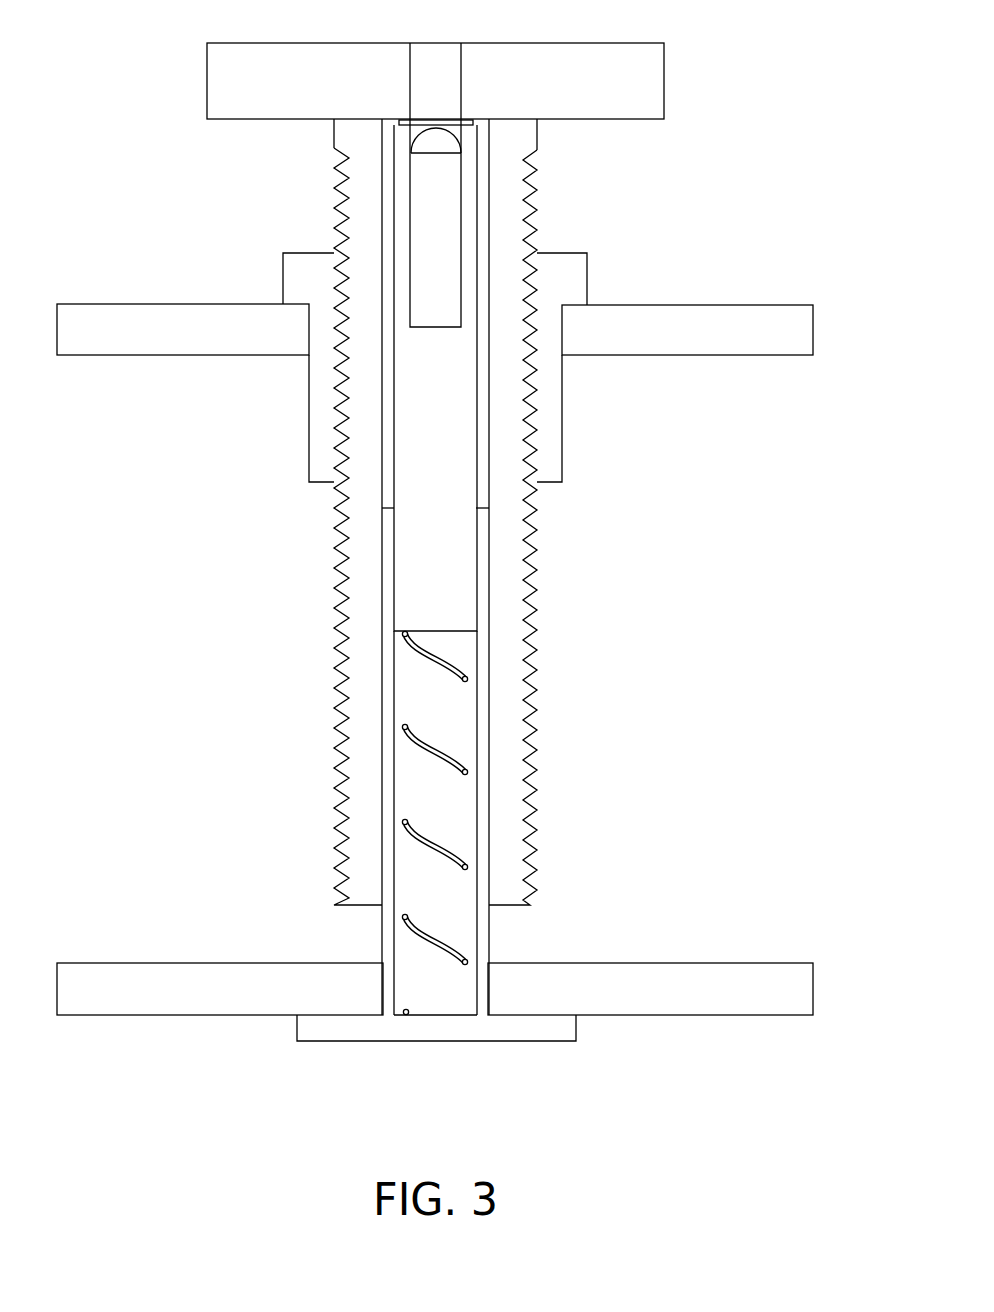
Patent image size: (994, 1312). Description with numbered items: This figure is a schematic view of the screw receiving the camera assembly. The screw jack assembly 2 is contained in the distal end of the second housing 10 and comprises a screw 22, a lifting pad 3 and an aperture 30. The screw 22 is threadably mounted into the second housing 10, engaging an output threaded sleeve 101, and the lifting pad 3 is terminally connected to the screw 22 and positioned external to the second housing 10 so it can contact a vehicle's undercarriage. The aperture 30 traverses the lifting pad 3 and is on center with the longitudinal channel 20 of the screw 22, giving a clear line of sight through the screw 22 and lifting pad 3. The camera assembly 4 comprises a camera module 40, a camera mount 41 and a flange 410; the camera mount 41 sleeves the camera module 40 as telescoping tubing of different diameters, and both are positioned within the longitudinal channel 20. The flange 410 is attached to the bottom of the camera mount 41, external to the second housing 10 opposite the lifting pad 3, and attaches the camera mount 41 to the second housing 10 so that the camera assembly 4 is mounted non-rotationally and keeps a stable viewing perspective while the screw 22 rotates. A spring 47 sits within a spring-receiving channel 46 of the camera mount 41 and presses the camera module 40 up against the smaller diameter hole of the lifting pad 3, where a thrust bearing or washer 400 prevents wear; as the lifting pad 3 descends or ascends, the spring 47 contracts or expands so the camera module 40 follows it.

The screw jack assembly 2 is at (733, 178).
The lifting pad 3 is at (215, 78).
The aperture 30 is at (435, 58).
The thrust bearing or washer 400 is at (407, 115).
The longitudinal channel 20 is at (483, 138).
The camera assembly 4 is at (527, 570).
The camera module 40 is at (455, 250).
The camera mount 41 is at (483, 948).
The screw 22 is at (350, 660).
The second housing 10 is at (148, 305).
The output threaded sleeve 101 is at (315, 392).
The flange 410 is at (297, 1027).
The spring 47 is at (418, 746).
The spring-receiving channel 46 is at (435, 994).